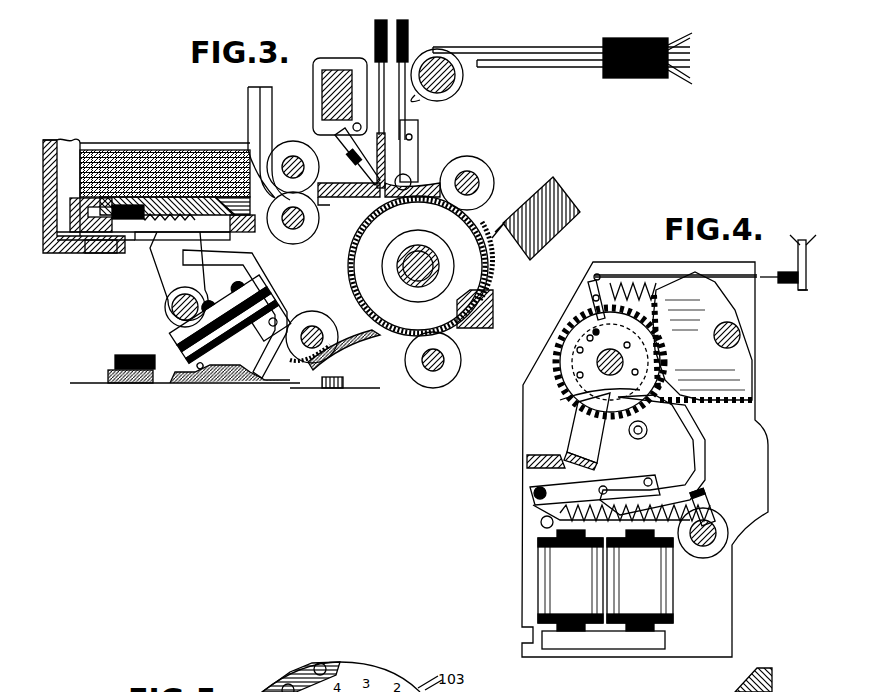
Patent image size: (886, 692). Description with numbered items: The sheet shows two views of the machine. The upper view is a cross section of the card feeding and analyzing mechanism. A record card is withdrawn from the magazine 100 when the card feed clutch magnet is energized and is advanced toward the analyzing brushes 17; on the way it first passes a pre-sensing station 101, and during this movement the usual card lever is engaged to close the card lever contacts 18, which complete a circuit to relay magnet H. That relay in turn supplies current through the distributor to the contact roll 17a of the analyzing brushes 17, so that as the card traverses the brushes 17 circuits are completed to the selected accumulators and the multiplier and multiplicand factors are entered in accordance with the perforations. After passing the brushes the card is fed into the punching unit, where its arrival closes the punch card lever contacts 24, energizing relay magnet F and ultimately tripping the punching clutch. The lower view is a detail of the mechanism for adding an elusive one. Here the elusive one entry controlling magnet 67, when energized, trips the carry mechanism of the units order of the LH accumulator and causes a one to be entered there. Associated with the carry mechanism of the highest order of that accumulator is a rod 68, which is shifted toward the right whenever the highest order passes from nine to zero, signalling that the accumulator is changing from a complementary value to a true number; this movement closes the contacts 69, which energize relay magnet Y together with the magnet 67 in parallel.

In FIG. 3, the magazine 100 is at (165, 144).
In FIG. 3, the pre-sensing station 101 is at (355, 186).
In FIG. 3, the card lever contacts 18 is at (398, 102).
In FIG. 3, the analyzing brushes 17 is at (495, 225).
In FIG. 3, the contact roll 17a is at (348, 264).
In FIG. 3, the punch card lever contacts 24 is at (175, 353).
In FIG. 4, the rod 68 is at (650, 277).
In FIG. 4, the contacts 69 is at (806, 286).
In FIG. 4, the elusive one entry controlling magnet 67 is at (674, 590).